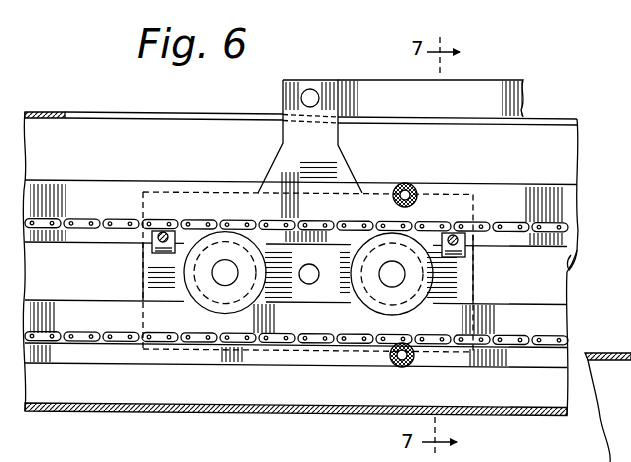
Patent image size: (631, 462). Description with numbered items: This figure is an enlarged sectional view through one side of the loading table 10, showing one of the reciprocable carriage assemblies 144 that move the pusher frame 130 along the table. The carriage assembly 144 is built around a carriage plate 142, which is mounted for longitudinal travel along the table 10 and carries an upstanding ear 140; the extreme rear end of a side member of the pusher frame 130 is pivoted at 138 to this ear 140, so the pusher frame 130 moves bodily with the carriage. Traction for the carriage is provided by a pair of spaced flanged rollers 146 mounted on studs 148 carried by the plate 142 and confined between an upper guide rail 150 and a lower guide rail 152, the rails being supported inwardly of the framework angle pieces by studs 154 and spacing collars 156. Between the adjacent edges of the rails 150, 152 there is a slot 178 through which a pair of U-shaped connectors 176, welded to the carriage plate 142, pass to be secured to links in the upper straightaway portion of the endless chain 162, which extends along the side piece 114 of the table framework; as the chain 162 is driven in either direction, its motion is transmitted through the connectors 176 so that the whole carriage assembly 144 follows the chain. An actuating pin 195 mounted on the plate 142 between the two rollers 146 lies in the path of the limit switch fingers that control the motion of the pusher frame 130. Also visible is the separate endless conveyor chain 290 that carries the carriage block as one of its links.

The loading table 10 is at (245, 105).
The side piece 114 is at (331, 413).
The pusher frame 130 is at (507, 90).
The pivot 138 is at (310, 89).
The upstanding ear 140 is at (338, 105).
The carriage plate 142 is at (292, 297).
The carriage assembly 144 is at (268, 152).
The flanged roller 146 is at (192, 285).
The stud 148 is at (223, 283).
The upper guide rail 150 is at (560, 201).
The lower guide rail 152 is at (555, 320).
The stud 154 is at (411, 187).
The spacing collar 156 is at (416, 186).
The endless chain 162 is at (107, 218).
The U-shaped connector 176 is at (150, 250).
The slot 178 is at (570, 268).
The actuating pin 195 is at (309, 284).
The endless conveyor chain 290 is at (507, 366).